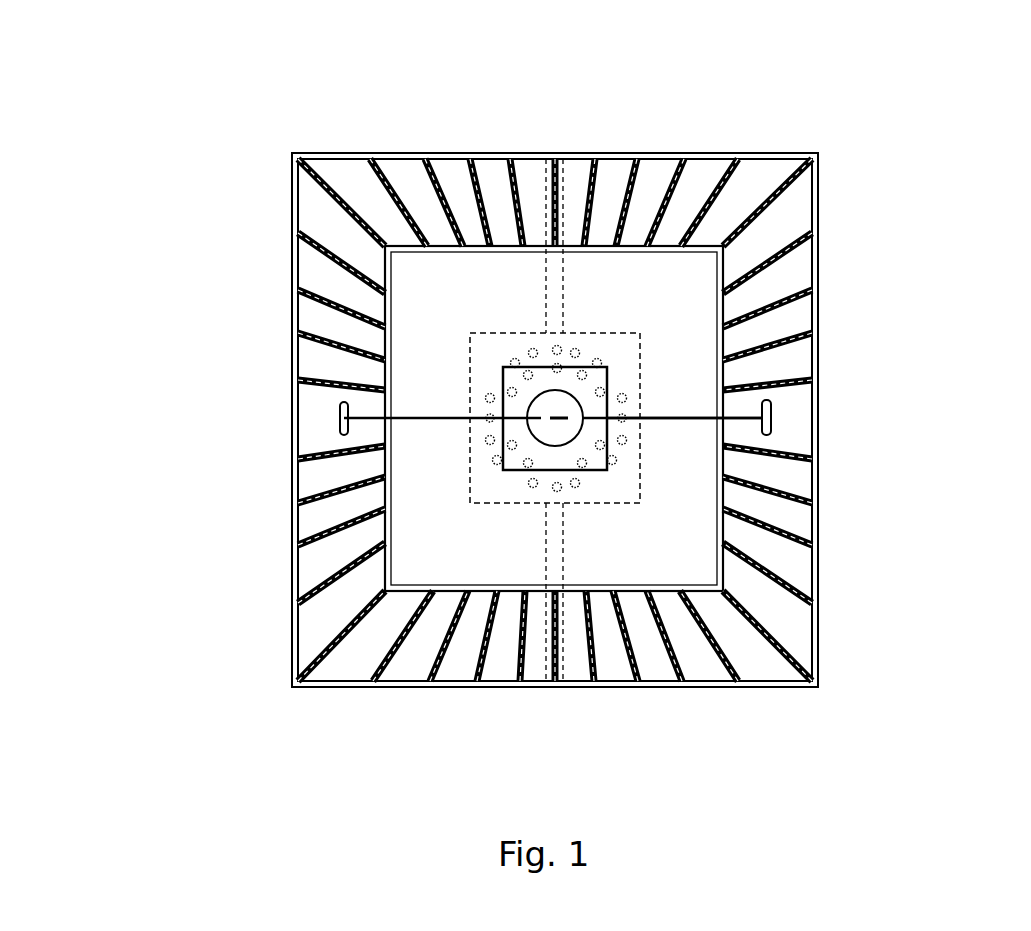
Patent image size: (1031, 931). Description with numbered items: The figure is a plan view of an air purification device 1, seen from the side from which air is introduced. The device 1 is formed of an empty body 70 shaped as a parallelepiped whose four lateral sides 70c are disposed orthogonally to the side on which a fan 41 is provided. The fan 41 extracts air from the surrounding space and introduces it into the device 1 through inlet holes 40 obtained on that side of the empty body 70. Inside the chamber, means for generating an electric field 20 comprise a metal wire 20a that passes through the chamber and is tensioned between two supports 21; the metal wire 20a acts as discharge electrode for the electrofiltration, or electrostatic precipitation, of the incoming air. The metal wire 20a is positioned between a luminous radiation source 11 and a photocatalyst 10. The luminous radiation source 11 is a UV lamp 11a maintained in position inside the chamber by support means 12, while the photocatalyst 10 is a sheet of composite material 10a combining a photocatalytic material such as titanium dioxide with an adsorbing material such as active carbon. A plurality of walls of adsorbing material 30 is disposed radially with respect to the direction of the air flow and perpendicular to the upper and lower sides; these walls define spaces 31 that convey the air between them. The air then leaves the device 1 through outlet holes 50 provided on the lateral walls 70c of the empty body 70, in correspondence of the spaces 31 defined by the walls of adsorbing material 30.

The air purification device 1 is at (571, 414).
The photocatalyst 10 is at (562, 427).
The composite material 10a is at (470, 560).
The luminous radiation source 11 is at (674, 608).
The UV lamp 11a is at (557, 447).
The support means 12 is at (540, 223).
The means for generating an electric field 20 is at (674, 400).
The metal wire 20a is at (693, 422).
The supports 21 is at (776, 418).
The walls of adsorbing material 30 is at (297, 480).
The spaces 31 is at (793, 513).
The inlet hole 40 is at (620, 388).
The fan 41 is at (640, 333).
The outlet hole 50 is at (449, 152).
The empty body 70 is at (549, 387).
The lateral sides 70c is at (576, 150).